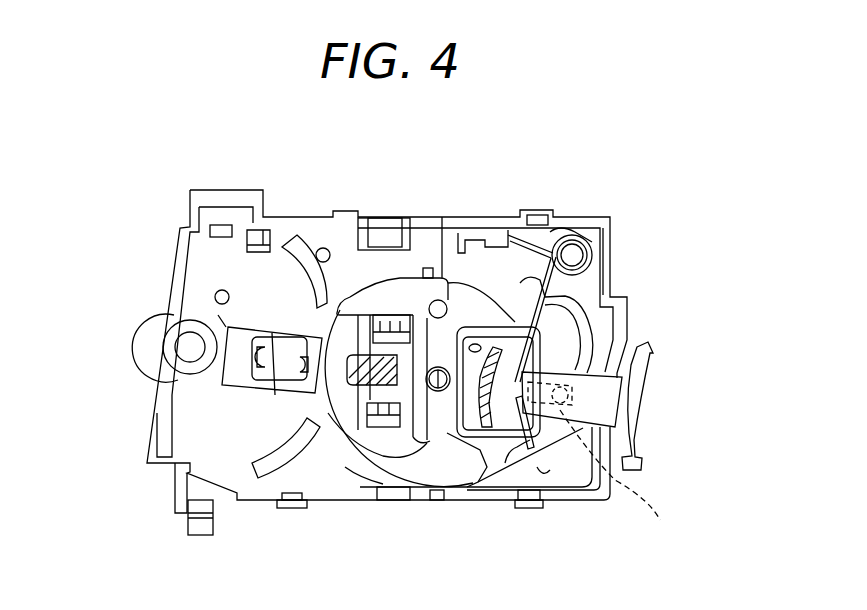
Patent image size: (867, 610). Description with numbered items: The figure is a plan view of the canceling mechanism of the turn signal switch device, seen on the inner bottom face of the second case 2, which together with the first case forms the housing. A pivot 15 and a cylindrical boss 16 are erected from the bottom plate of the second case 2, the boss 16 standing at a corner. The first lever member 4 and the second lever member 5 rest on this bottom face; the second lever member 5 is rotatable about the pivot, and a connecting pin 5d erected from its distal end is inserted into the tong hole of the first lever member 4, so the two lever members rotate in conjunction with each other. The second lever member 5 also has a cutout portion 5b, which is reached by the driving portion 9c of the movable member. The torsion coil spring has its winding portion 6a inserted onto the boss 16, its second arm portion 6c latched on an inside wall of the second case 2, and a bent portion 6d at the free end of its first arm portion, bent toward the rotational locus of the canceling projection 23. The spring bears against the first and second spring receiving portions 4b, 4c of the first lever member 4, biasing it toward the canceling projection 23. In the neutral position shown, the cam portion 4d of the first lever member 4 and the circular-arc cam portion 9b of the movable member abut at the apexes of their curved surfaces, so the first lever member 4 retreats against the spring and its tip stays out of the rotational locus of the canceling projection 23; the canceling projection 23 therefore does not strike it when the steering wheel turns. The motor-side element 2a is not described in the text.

The second case 2 is at (233, 190).
The motor 2a is at (187, 347).
The first lever member 4 is at (603, 397).
The first spring receiving portion 4b is at (562, 372).
The second spring receiving portion 4c is at (558, 403).
The cam portion 4d is at (459, 400).
The second lever member 5 is at (353, 305).
The cutout portion 5b is at (345, 467).
The connecting pin 5d is at (660, 520).
The winding portion 6a is at (592, 247).
The second arm portion 6c is at (493, 348).
The bent portion 6d is at (512, 448).
The cam portion 9b is at (487, 320).
The driving portion 9c is at (347, 380).
The pivot 15 is at (438, 392).
The cylindrical boss 16 is at (572, 252).
The canceling projection 23 is at (640, 347).